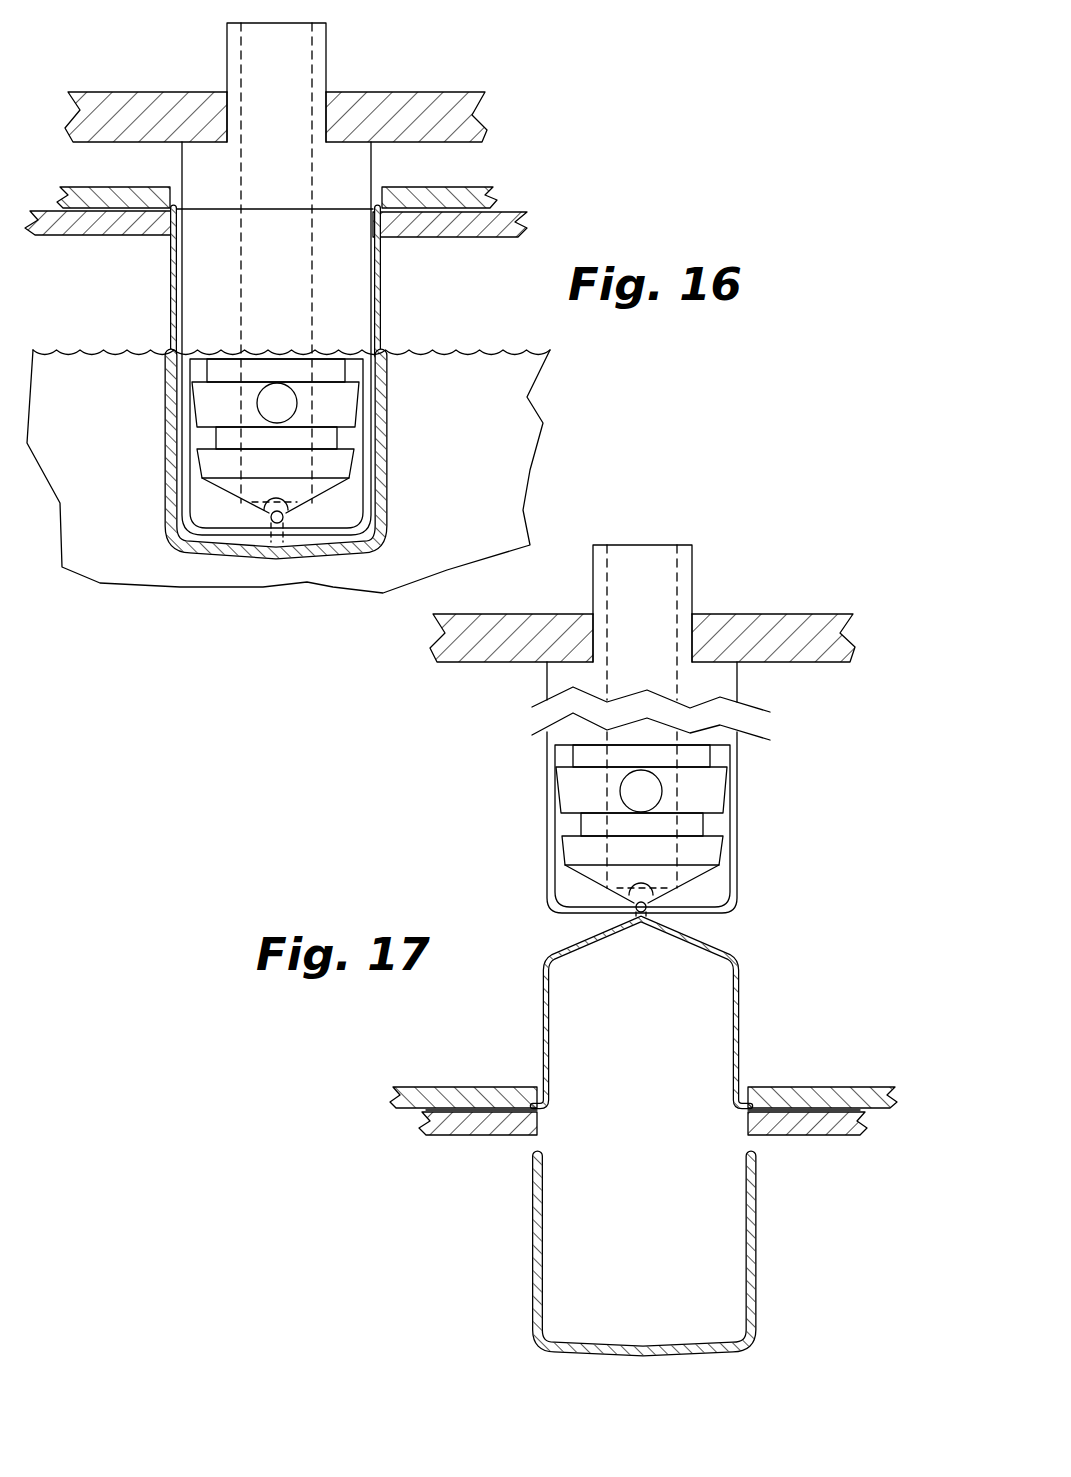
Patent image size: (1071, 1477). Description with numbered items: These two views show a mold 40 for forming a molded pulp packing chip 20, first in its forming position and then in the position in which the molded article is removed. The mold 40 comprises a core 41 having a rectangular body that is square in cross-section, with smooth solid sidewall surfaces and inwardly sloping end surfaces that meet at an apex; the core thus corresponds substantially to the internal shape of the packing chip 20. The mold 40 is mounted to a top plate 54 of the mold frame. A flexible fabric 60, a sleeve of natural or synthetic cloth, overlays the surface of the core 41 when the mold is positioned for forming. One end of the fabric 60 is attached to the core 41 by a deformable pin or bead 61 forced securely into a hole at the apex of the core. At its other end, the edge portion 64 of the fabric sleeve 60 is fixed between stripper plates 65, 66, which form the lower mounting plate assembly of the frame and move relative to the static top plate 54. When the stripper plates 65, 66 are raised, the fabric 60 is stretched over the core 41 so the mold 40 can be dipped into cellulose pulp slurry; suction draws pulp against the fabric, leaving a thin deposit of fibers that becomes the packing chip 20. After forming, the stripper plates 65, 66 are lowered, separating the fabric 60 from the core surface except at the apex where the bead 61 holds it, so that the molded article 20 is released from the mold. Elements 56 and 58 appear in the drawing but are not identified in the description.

In FIG. 16, the packing chip 20 is at (383, 512).
In FIG. 17, the packing chip 20 is at (755, 1283).
In FIG. 17, the mold 40 is at (737, 873).
In FIG. 17, the core 41 is at (737, 685).
In FIG. 16, the top plate 54 is at (450, 117).
In FIG. 17, the top plate 54 is at (777, 622).
In FIG. 16, the pin 56 is at (278, 403).
In FIG. 16, the tube 58 is at (228, 58).
In FIG. 17, the tube 58 is at (692, 567).
In FIG. 16, the flexible fabric 60 is at (173, 303).
In FIG. 17, the flexible fabric 60 is at (742, 978).
In FIG. 16, the bead 61 is at (277, 542).
In FIG. 17, the bead 61 is at (641, 920).
In FIG. 16, the edge portion 64 is at (436, 220).
In FIG. 17, the edge portion 64 is at (810, 1112).
In FIG. 16, the stripper plate 65 is at (458, 187).
In FIG. 17, the stripper plate 65 is at (777, 1090).
In FIG. 16, the stripper plate 66 is at (483, 228).
In FIG. 17, the stripper plate 66 is at (820, 1127).